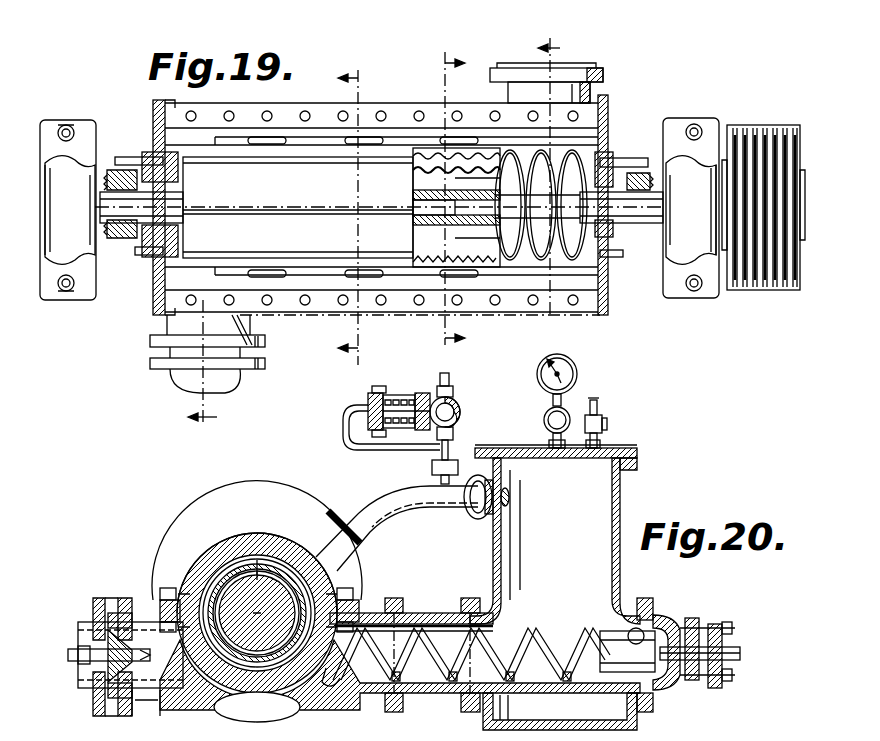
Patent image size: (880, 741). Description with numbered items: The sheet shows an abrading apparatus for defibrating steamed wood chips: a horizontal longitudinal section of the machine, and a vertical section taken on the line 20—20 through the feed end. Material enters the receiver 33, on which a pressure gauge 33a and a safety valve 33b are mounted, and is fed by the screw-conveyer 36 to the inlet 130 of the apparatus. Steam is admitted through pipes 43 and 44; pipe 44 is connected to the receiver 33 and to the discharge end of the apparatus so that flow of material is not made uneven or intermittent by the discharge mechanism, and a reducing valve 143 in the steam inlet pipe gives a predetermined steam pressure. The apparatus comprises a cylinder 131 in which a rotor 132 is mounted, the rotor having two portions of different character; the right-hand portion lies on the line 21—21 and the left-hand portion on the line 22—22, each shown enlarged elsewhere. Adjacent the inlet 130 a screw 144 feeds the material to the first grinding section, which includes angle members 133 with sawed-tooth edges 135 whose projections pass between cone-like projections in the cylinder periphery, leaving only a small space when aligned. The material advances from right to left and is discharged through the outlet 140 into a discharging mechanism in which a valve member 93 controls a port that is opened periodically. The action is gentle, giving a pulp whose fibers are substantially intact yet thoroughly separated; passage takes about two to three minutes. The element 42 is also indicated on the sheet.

In FIG. 19, the section line 20— 20 is at (366, 242).
In FIG. 19, the section line 21— 21 is at (463, 198).
In FIG. 19, the section line 22— 22 is at (347, 213).
In FIG. 19, the inlet 130 is at (581, 68).
In FIG. 20, the inlet 130 is at (378, 612).
In FIG. 20, the cylinder 131 is at (192, 563).
In FIG. 19, the rotor 132 is at (298, 207).
In FIG. 20, the rotor 132 is at (297, 628).
In FIG. 19, the angle members 133 is at (418, 180).
In FIG. 19, the sawed-tooth edges 135 is at (478, 168).
In FIG. 19, the outlet 140 is at (232, 333).
In FIG. 20, the outlet 140 is at (147, 703).
In FIG. 19, the screw 144 is at (541, 205).
In FIG. 20, the screw 144 is at (273, 572).
In FIG. 20, the receiver 33 is at (623, 500).
In FIG. 20, the pressure gauge 33a is at (583, 370).
In FIG. 20, the safety valve 33b is at (598, 416).
In FIG. 20, the screw-conveyer 36 is at (543, 640).
In FIG. 20, the screw conveyor 42 is at (440, 695).
In FIG. 20, the steam pipe 43 is at (447, 382).
In FIG. 20, the reducing valve 143 is at (455, 414).
In FIG. 20, the steam pipe 44 is at (428, 500).
In FIG. 20, the valve member 93 is at (143, 672).